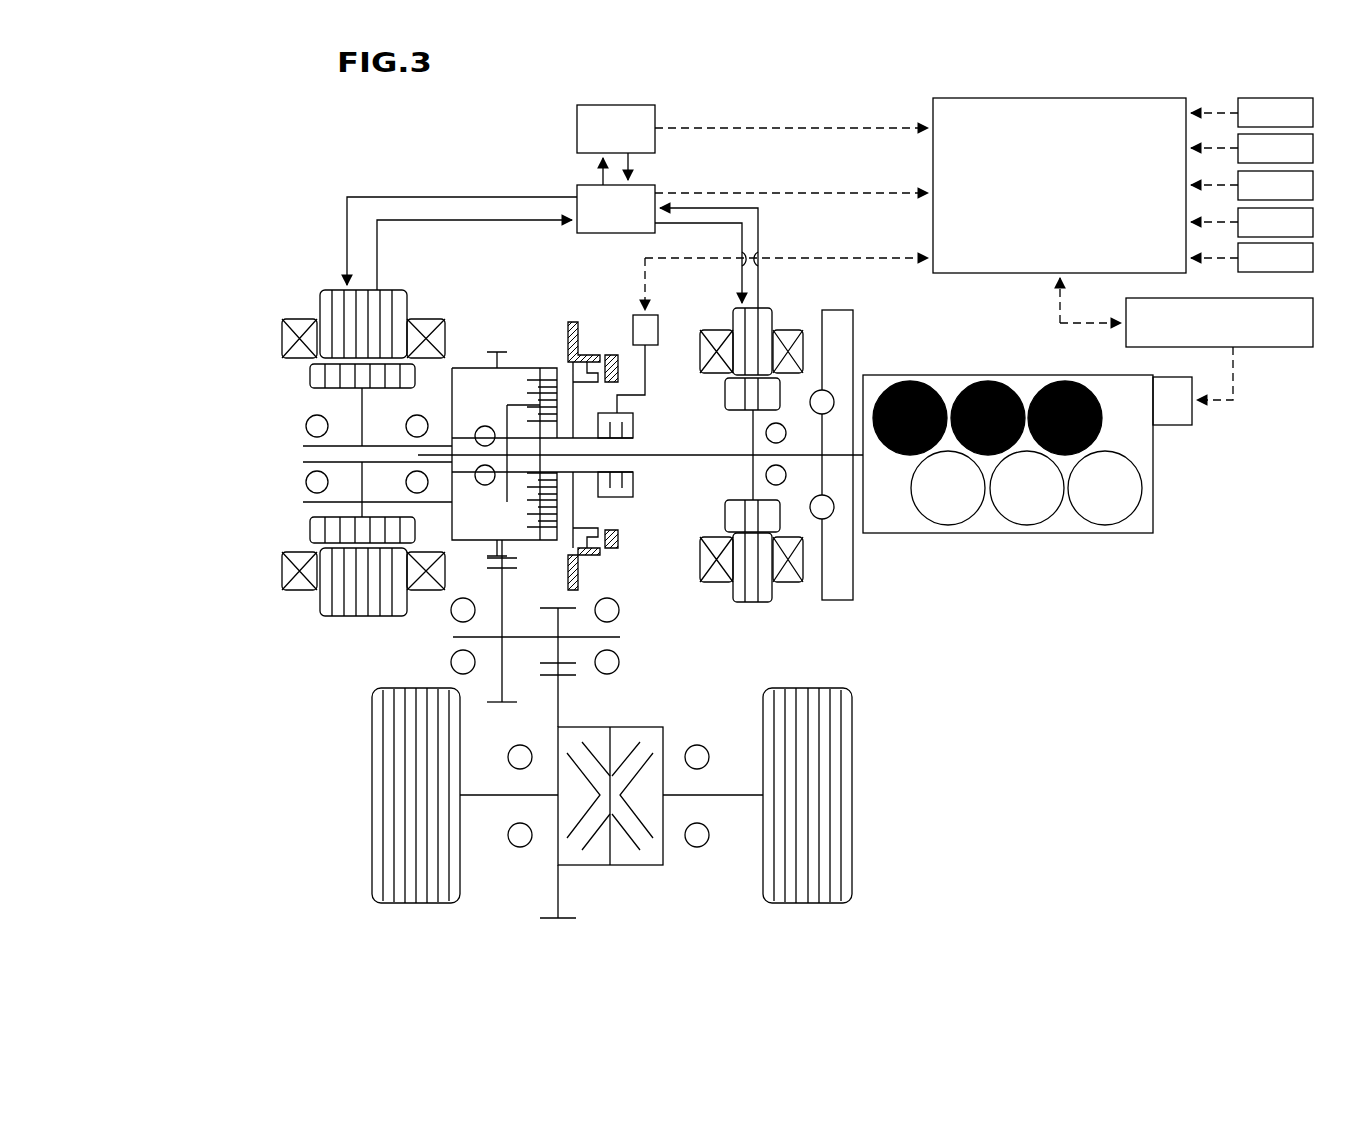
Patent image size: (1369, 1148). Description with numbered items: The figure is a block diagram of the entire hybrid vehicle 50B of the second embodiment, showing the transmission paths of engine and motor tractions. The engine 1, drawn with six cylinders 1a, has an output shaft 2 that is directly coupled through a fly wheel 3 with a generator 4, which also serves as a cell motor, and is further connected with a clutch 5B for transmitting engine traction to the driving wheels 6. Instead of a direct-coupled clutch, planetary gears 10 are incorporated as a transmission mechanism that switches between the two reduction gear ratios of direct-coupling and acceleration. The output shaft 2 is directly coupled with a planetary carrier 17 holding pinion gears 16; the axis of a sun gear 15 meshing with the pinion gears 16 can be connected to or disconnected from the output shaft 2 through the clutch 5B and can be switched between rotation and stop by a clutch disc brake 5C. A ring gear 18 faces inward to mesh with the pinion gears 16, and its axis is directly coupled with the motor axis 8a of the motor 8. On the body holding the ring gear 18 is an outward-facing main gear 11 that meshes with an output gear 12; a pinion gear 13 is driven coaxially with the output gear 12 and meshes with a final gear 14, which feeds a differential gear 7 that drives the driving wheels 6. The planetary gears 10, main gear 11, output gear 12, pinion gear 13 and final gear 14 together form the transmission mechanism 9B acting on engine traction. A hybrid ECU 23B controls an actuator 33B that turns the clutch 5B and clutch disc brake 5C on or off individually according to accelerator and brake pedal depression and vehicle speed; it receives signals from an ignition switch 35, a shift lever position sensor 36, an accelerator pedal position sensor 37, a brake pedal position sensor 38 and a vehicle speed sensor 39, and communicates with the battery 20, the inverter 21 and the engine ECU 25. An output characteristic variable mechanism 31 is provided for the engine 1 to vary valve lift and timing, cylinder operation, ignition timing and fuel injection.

The engine 1 is at (1075, 533).
The cylinders 1a is at (1100, 425).
The output shaft 2 is at (798, 457).
The fly wheel 3 is at (837, 350).
The generator 4 is at (758, 308).
The clutch 5B is at (636, 478).
The clutch disc brake 5C is at (575, 377).
The driving wheels 6 is at (852, 742).
The differential gear 7 is at (593, 865).
The motor 8 is at (400, 290).
The motor axis 8a is at (384, 462).
The transmission mechanism 9B is at (92, 855).
The planetary gears 10 is at (142, 607).
The main gear 11 is at (487, 552).
The output gear 12 is at (500, 683).
The pinion gear 13 is at (560, 620).
The final gear 14 is at (560, 707).
The sun gear 15 is at (527, 477).
The pinion gears 16 is at (310, 535).
The planetary carrier 17 is at (507, 413).
The ring gear 18 is at (527, 510).
The battery 20 is at (615, 105).
The inverter 21 is at (648, 180).
The hybrid ECU 23B is at (1055, 98).
The engine ECU 25 is at (1313, 322).
The output characteristic variable mechanism 31 is at (1192, 415).
The actuator 33B is at (655, 314).
The ignition switch 35 is at (1313, 113).
The shift lever position sensor 36 is at (1313, 148).
The accelerator pedal position sensor 37 is at (1313, 185).
The brake pedal position sensor 38 is at (1313, 222).
The vehicle speed sensor 39 is at (1313, 258).
The hybrid vehicle 50B is at (1074, 695).